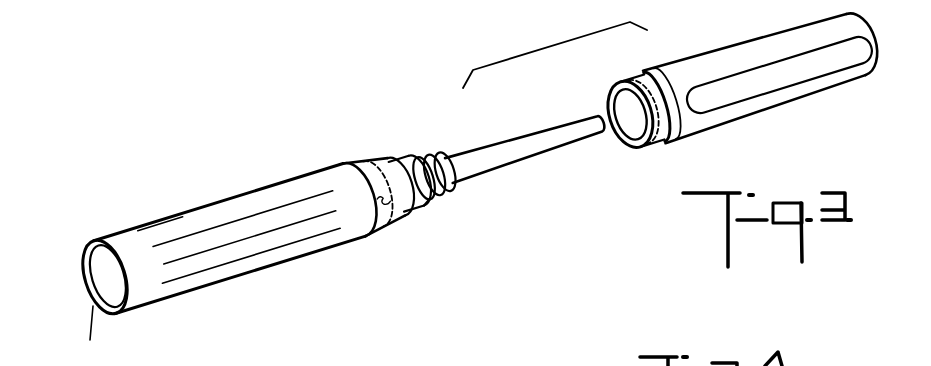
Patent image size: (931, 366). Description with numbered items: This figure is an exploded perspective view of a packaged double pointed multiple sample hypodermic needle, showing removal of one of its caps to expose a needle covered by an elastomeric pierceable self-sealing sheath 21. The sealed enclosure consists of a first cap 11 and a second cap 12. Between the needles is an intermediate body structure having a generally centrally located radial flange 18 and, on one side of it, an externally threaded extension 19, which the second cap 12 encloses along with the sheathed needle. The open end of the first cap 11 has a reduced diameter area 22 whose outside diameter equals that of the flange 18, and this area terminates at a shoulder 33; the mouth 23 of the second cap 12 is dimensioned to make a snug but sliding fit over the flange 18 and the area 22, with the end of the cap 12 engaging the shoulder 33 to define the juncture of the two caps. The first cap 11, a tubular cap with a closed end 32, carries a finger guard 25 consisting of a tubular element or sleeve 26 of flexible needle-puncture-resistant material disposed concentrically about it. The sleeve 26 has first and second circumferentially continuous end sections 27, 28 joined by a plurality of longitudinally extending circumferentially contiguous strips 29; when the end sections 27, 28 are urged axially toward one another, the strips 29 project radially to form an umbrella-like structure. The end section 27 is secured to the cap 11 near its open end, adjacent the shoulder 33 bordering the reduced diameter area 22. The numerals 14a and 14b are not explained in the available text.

The first cap 11 is at (87, 356).
The second cap 12 is at (772, 50).
The knurled coupling portion of barrel 14a is at (363, 160).
The knurled coupling ring of cap 14b is at (657, 138).
The radial flange 18 is at (424, 201).
The externally threaded extension 19 is at (433, 152).
The elastomeric pierceable self-sealing sheath 21 is at (523, 147).
The reduced diameter area 22 is at (398, 160).
The mouth of the cap 23 is at (623, 92).
The finger guard 25 is at (215, 209).
The tubular element or sleeve 26 is at (99, 238).
The first end section 27 is at (332, 175).
The second end section 28 is at (130, 240).
The longitudinally extending strips 29 is at (268, 247).
The closed end 32 is at (84, 258).
The shoulder 33 is at (415, 205).